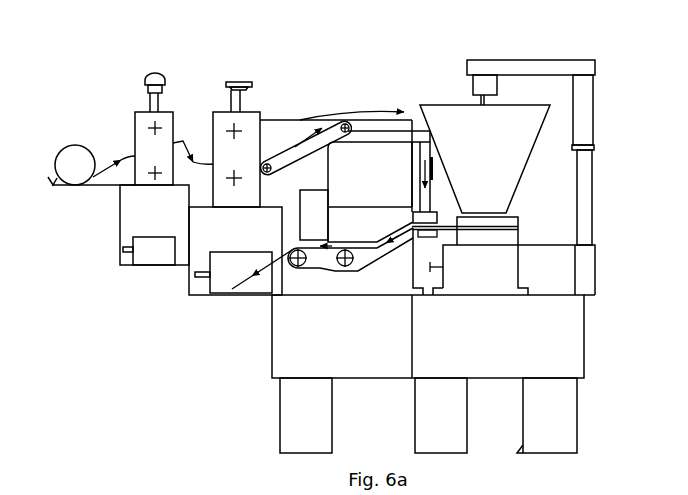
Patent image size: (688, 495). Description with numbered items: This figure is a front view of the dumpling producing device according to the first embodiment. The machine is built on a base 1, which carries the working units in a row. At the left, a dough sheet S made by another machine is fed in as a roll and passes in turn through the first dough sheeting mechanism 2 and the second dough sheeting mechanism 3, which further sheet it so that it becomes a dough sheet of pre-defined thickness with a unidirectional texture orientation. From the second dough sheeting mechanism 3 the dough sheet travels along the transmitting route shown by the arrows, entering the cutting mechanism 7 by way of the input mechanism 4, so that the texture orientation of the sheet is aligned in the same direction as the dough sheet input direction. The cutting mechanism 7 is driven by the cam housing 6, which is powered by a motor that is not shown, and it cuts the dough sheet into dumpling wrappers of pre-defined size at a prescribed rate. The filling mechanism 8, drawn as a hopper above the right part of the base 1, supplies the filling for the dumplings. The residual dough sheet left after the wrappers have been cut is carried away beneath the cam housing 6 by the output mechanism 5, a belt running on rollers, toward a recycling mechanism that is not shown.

The dough sheet S is at (70, 165).
The base 1 is at (555, 347).
The first dough sheeting mechanism 2 is at (143, 118).
The second dough sheeting mechanism 3 is at (218, 118).
The input mechanism 4 is at (340, 128).
The output mechanism 5 is at (320, 268).
The cam housing 6 is at (370, 155).
The cutting mechanism 7 is at (417, 193).
The filling mechanism 8 is at (502, 118).